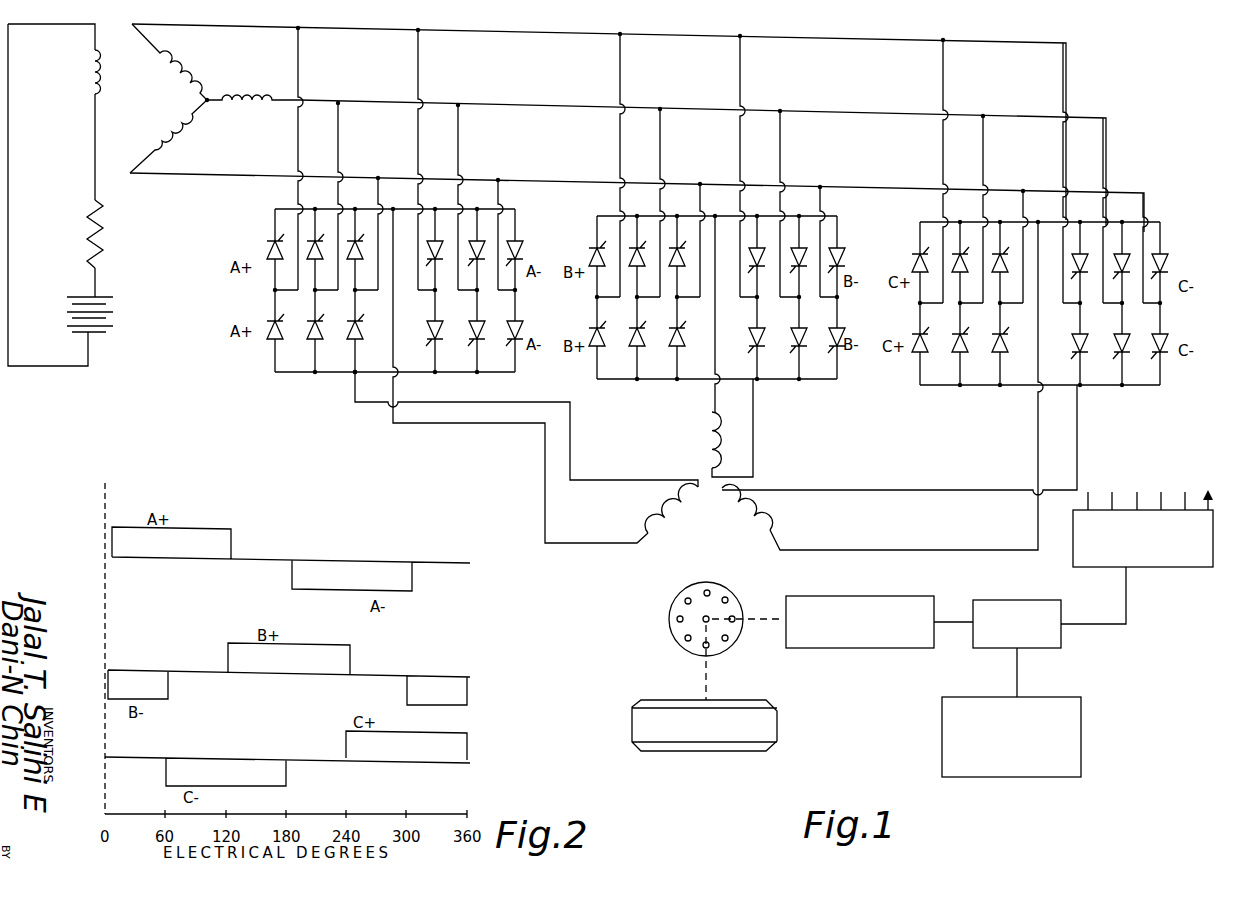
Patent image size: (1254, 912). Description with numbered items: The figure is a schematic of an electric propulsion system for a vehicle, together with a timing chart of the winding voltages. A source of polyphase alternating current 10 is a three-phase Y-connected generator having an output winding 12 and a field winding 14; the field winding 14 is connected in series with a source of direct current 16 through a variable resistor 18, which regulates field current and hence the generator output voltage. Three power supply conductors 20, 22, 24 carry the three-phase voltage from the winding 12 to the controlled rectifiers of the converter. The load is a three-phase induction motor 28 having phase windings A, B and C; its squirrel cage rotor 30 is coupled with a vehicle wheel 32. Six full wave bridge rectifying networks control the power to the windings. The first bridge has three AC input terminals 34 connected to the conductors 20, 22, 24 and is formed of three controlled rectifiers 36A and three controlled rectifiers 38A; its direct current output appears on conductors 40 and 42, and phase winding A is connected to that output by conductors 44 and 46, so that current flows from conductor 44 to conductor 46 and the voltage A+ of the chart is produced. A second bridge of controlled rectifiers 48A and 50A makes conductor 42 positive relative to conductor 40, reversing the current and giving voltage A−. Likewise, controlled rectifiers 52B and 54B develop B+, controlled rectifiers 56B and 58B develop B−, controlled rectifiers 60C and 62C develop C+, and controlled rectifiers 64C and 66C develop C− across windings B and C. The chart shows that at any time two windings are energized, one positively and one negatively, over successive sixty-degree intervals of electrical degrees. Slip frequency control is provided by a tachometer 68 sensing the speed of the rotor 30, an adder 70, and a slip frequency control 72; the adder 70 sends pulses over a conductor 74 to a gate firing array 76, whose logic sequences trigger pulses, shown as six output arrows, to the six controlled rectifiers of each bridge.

The source of polyphase alternating current 10 is at (148, 188).
The output winding 12 is at (208, 113).
The field winding 14 is at (88, 88).
The source of direct current 16 is at (112, 300).
The variable resistor 18 is at (118, 208).
The power supply conductor 20 is at (522, 34).
The power supply conductor 22 is at (523, 106).
The power supply conductor 24 is at (555, 182).
The three-phase induction motor 28 is at (705, 522).
The squirrel cage rotor 30 is at (735, 600).
The vehicle wheel 32 is at (725, 753).
The AC input terminals 34 is at (378, 291).
The controlled rectifiers 36A is at (362, 235).
The controlled rectifiers 38A is at (362, 317).
The conductor 40 is at (352, 207).
The conductor 42 is at (341, 375).
The conductor 44 is at (466, 424).
The conductor 46 is at (513, 403).
The controlled rectifiers 48A is at (484, 249).
The controlled rectifiers 50A is at (484, 329).
The controlled rectifiers 52B is at (627, 226).
The controlled rectifiers 54B is at (618, 347).
The controlled rectifiers 56B is at (816, 235).
The controlled rectifiers 58B is at (815, 326).
The controlled rectifiers 60C is at (939, 249).
The controlled rectifiers 62C is at (958, 368).
The controlled rectifiers 64C is at (1141, 253).
The controlled rectifiers 66C is at (1141, 333).
The tachometer 68 is at (841, 648).
The adder 70 is at (1037, 648).
The slip frequency control 72 is at (1082, 748).
The conductor 74 is at (1107, 625).
The gate firing array 76 is at (1155, 568).